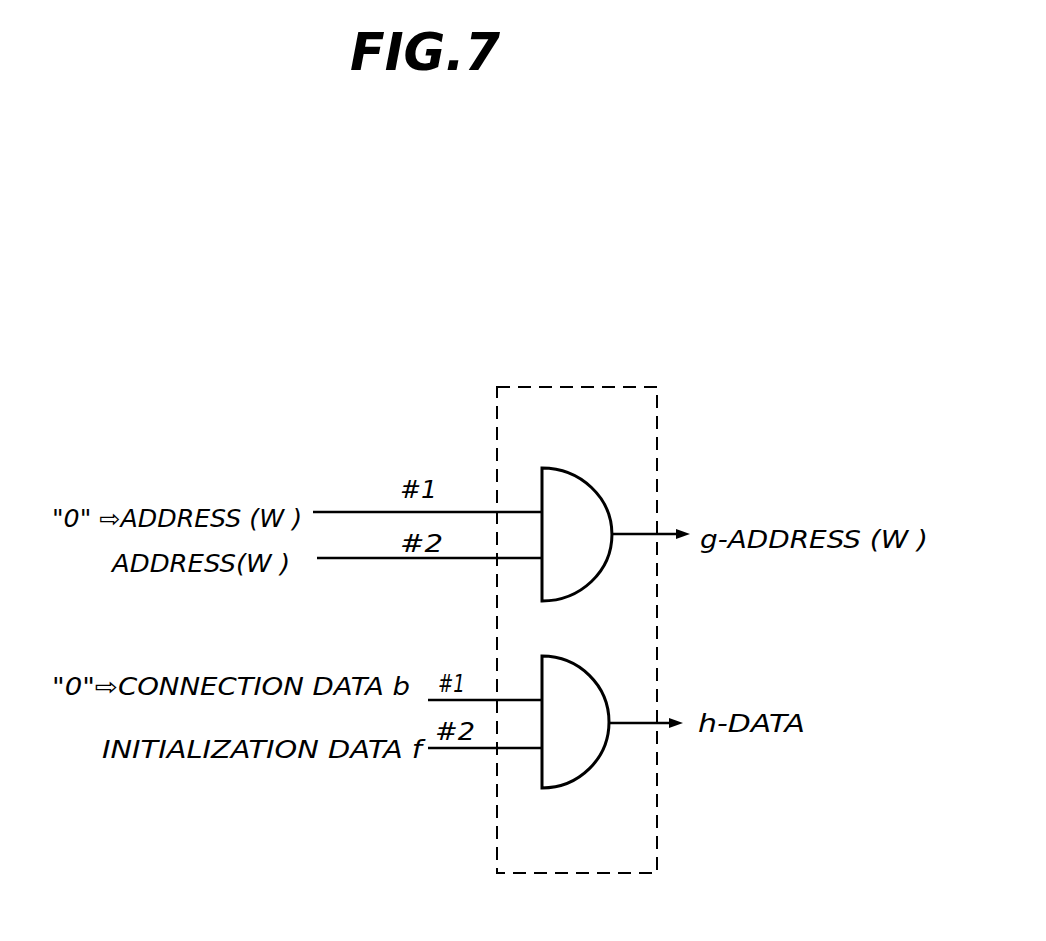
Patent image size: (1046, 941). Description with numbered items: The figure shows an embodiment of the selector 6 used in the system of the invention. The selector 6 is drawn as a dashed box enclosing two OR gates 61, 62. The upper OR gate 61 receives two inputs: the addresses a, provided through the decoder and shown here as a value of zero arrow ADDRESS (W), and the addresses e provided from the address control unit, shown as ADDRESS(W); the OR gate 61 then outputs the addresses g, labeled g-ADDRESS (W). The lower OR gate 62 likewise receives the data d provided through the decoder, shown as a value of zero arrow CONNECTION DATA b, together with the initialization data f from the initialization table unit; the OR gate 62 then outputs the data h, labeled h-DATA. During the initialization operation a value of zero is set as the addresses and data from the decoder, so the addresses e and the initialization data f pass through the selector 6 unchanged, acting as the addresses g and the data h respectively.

The selector 6 is at (532, 385).
The OR gate 61 is at (595, 457).
The OR gate 62 is at (590, 672).